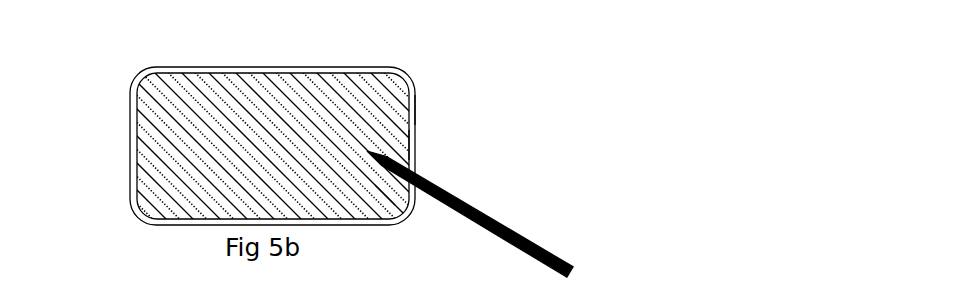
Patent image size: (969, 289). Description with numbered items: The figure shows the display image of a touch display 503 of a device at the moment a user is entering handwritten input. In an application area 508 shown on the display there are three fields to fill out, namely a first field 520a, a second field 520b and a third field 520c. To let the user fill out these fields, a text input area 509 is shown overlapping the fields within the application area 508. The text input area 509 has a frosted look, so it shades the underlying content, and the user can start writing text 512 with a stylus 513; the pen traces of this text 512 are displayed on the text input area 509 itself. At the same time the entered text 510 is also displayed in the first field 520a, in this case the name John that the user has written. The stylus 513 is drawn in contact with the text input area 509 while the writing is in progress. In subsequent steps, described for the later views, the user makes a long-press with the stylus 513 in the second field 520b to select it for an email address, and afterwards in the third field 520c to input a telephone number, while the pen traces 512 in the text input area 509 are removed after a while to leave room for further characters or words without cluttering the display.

The touch display 503 is at (189, 58).
The application area 508 is at (137, 170).
The text input area 509 is at (131, 100).
The text 510 is at (305, 93).
The text 512 is at (342, 180).
The stylus 513 is at (518, 230).
The first field 520a is at (413, 92).
The second field 520b is at (413, 135).
The third field 520c is at (412, 178).